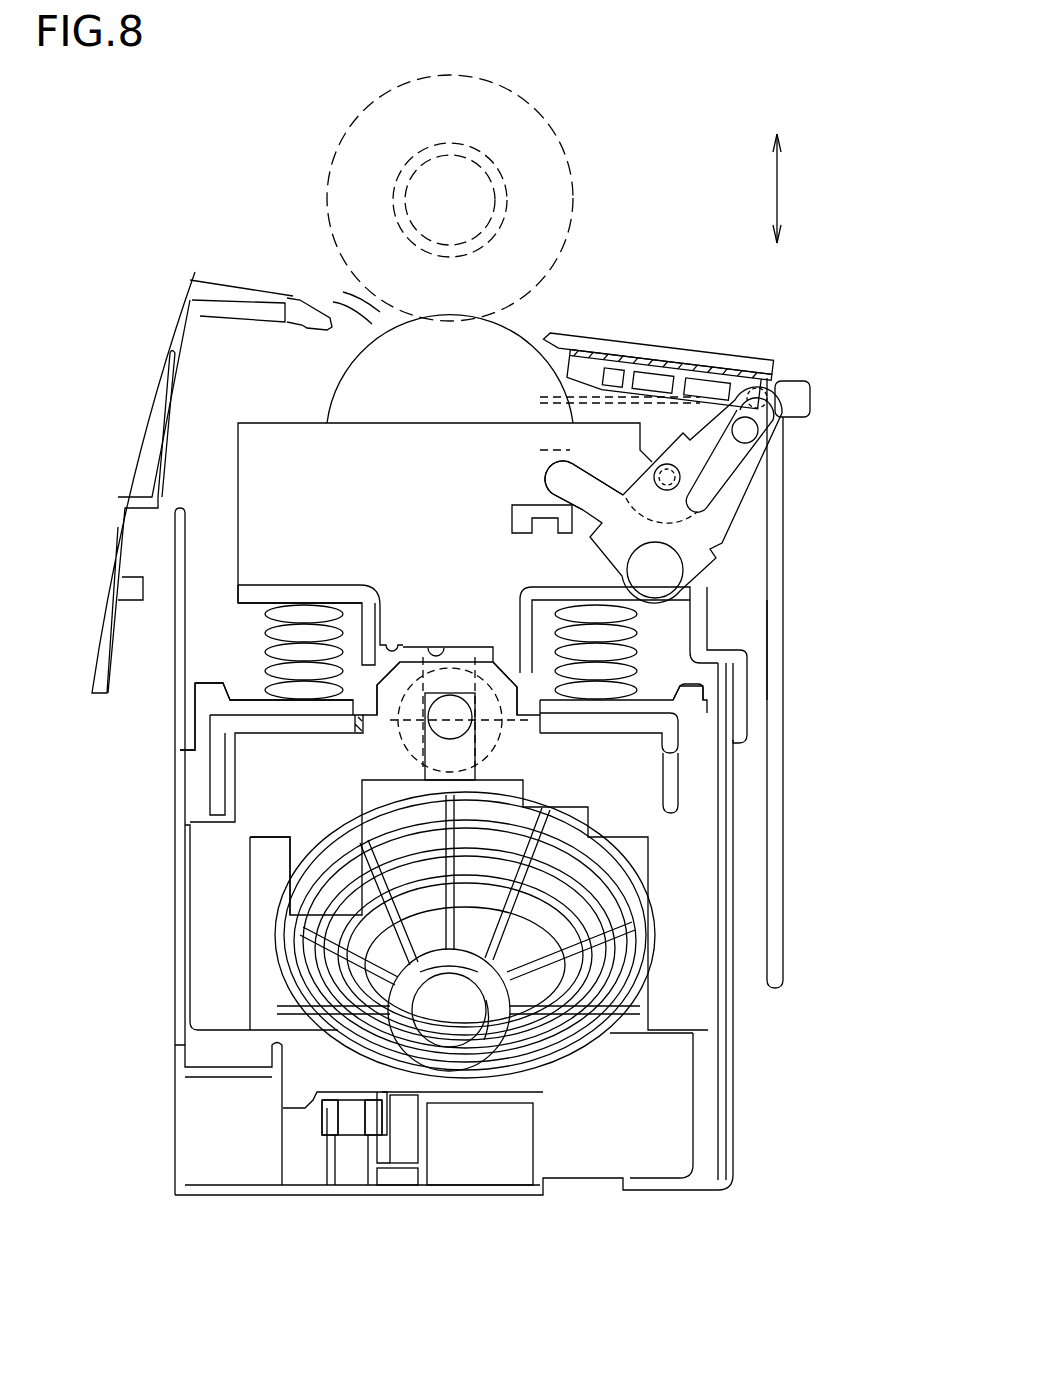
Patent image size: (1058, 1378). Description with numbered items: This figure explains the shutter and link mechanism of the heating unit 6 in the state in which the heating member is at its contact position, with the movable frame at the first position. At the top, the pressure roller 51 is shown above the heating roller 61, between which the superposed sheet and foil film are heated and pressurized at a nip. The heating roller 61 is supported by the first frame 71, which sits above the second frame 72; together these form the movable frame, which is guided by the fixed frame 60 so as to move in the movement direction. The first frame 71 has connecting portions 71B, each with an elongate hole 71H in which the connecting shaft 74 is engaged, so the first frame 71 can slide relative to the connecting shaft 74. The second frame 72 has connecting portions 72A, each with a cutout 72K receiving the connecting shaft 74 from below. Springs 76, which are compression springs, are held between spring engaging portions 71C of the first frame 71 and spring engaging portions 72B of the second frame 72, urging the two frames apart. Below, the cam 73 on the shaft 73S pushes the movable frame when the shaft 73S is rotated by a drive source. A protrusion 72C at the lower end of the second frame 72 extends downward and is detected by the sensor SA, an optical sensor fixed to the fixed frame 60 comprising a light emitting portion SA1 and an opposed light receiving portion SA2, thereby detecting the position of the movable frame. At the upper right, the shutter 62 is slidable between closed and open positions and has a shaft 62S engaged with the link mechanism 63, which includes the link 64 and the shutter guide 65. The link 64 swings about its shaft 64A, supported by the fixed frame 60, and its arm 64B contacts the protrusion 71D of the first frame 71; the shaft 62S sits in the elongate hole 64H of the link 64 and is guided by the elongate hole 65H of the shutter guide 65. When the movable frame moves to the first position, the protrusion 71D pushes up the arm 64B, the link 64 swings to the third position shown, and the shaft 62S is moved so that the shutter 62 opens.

The pressure roller 51 is at (556, 136).
The heating unit 6 is at (683, 149).
The heating roller 61 is at (362, 320).
The first frame 71 is at (248, 417).
The elongate hole 71H is at (430, 650).
The protrusion 71D is at (512, 521).
The spring engaging portion 71C is at (265, 608).
The connecting portion 71B is at (362, 722).
The spring 76 is at (263, 640).
The second frame 72 is at (180, 914).
The cutout 72K is at (447, 698).
The connecting portion 72A is at (660, 690).
The spring engaging portion 72B is at (362, 668).
The protrusion 72C is at (353, 948).
The connecting shaft 74 is at (458, 724).
The cam 73 is at (560, 1080).
The shaft 73S is at (463, 1035).
The fixed frame 60 is at (790, 361).
The shaft 62S is at (790, 408).
The shutter guide 65 is at (553, 337).
The elongate hole 65H is at (732, 362).
The shutter 62 is at (657, 362).
The link 64 is at (756, 500).
The arm 64B is at (546, 478).
The elongate hole 64H is at (752, 473).
The shaft 64A is at (668, 570).
The link mechanism 63 is at (812, 549).
The light emitting portion SA1 is at (328, 1120).
The light receiving portion SA2 is at (358, 1124).
The sensor SA is at (394, 1266).